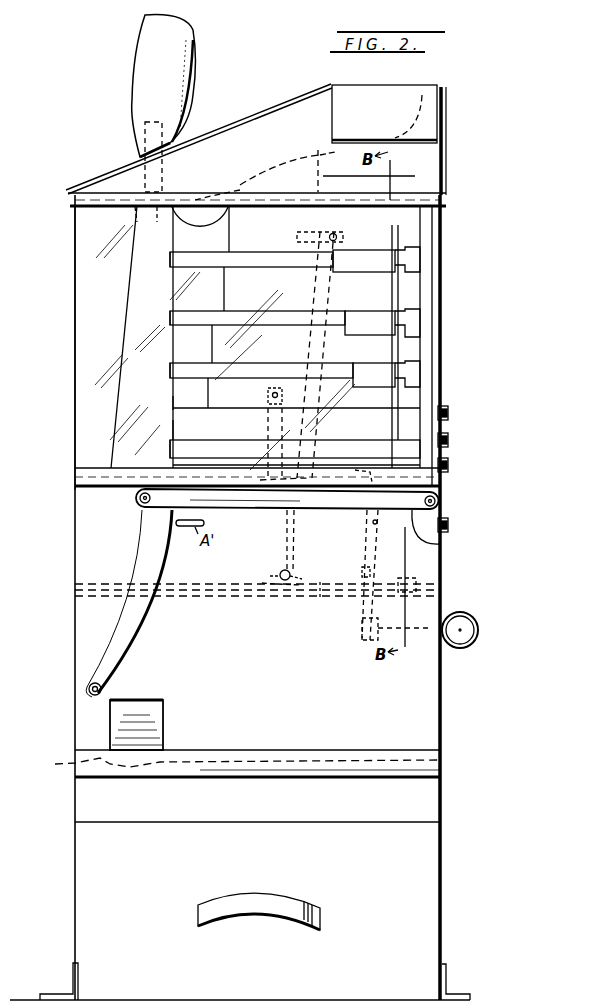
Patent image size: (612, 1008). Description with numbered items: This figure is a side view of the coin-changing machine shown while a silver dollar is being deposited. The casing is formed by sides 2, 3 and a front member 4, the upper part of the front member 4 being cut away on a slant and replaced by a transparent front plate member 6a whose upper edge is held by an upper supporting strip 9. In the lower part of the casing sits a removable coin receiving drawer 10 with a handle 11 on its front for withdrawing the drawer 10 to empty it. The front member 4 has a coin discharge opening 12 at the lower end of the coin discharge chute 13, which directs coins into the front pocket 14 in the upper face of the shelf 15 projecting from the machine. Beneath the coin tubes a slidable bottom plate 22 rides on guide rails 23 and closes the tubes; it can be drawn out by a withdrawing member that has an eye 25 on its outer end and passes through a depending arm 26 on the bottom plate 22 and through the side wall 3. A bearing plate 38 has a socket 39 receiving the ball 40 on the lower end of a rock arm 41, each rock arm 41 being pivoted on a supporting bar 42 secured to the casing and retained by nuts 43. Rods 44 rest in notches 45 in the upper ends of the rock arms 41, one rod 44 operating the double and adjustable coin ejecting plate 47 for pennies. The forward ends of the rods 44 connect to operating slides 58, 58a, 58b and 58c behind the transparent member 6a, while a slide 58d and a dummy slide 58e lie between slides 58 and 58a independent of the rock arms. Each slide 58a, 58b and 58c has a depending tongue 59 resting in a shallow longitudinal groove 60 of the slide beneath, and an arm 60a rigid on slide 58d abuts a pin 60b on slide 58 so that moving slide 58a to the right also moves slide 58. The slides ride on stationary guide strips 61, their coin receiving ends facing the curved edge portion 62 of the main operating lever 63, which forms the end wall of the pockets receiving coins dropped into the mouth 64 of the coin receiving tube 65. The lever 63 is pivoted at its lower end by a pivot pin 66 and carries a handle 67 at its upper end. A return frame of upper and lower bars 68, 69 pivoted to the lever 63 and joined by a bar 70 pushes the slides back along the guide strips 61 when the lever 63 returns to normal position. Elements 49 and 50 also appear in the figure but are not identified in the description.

The side member 2 is at (78, 803).
The side member 3 is at (442, 820).
The front member 4 is at (440, 706).
The transparent front plate member 6a is at (75, 366).
The upper supporting strip 9 is at (440, 210).
The coin receiving drawer 10 is at (420, 898).
The handle 11 is at (295, 897).
The coin discharge opening 12 is at (165, 735).
The coin discharge chute 13 is at (130, 720).
The front pocket 14 is at (234, 762).
The shelf 15 is at (442, 775).
The bottom plate 22 is at (207, 600).
The guide rails 23 is at (78, 584).
The eye 25 is at (471, 620).
The depending arm 26 is at (365, 643).
The bearing plate 38 is at (312, 577).
The socket 39 is at (275, 574).
The ball 40 is at (298, 570).
The rock arm 41 is at (298, 526).
The supporting bar 42 is at (450, 414).
The nuts 43 is at (449, 408).
The rod 44 is at (333, 233).
The notch 45 is at (345, 232).
The coin ejecting plate 47 is at (418, 586).
The rod 49 is at (395, 468).
The link 50 is at (360, 500).
The operating slide 58 is at (357, 457).
The operating slide 58a is at (261, 351).
The operating slide 58b is at (257, 296).
The operating slide 58c is at (251, 237).
The slide 58d is at (296, 395).
The dummy slide 58e is at (195, 425).
The depending tongue 59 is at (405, 265).
The longitudinal groove 60 is at (362, 311).
The arm 60a is at (268, 432).
The pin 60b is at (290, 476).
The guide strips 61 is at (173, 318).
The curved edge portion 62 is at (173, 396).
The main operating lever 63 is at (120, 647).
The mouth 64 is at (415, 92).
The coin receiving tube 65 is at (268, 115).
The pivot pin 66 is at (88, 690).
The handle 67 is at (192, 80).
The upper bar 68 is at (265, 168).
The lower bar 69 is at (440, 544).
The bar 70 is at (438, 406).